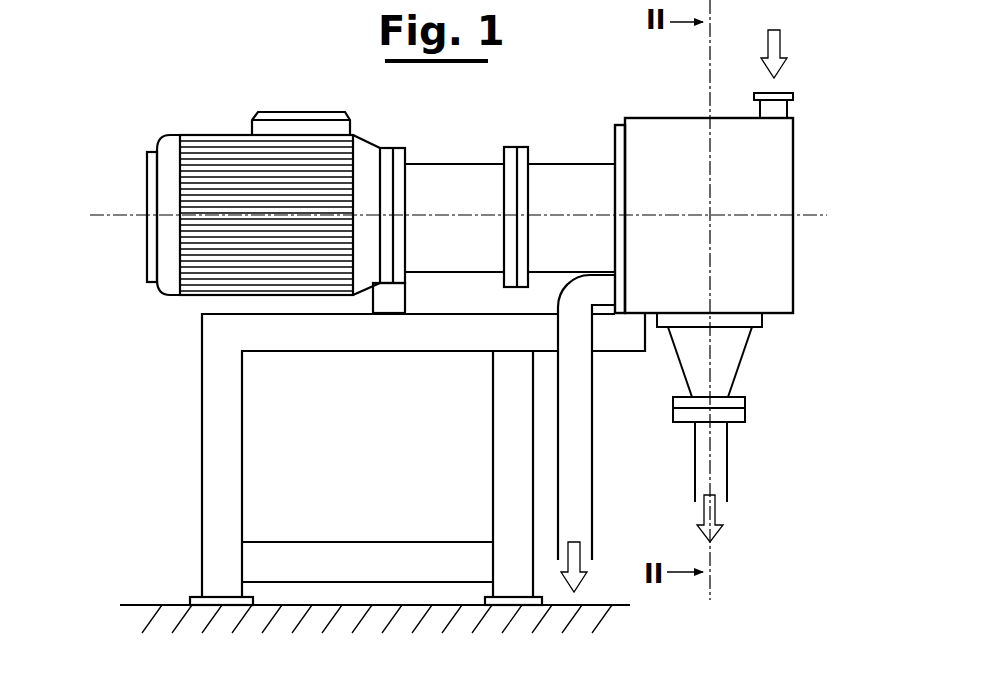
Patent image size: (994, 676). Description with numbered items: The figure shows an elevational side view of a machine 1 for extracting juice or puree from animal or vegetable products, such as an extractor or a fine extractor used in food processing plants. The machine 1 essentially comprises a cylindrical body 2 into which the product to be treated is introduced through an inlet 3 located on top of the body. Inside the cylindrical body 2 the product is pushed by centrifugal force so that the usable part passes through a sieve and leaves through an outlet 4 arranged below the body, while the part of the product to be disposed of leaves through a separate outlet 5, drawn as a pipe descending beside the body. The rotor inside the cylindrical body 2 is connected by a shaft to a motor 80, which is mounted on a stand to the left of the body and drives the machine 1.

The machine 1 is at (258, 43).
The cylindrical body 2 is at (660, 95).
The inlet 3 is at (782, 95).
The outlet 4 is at (733, 355).
The outlet 5 is at (607, 287).
The motor 80 is at (135, 292).